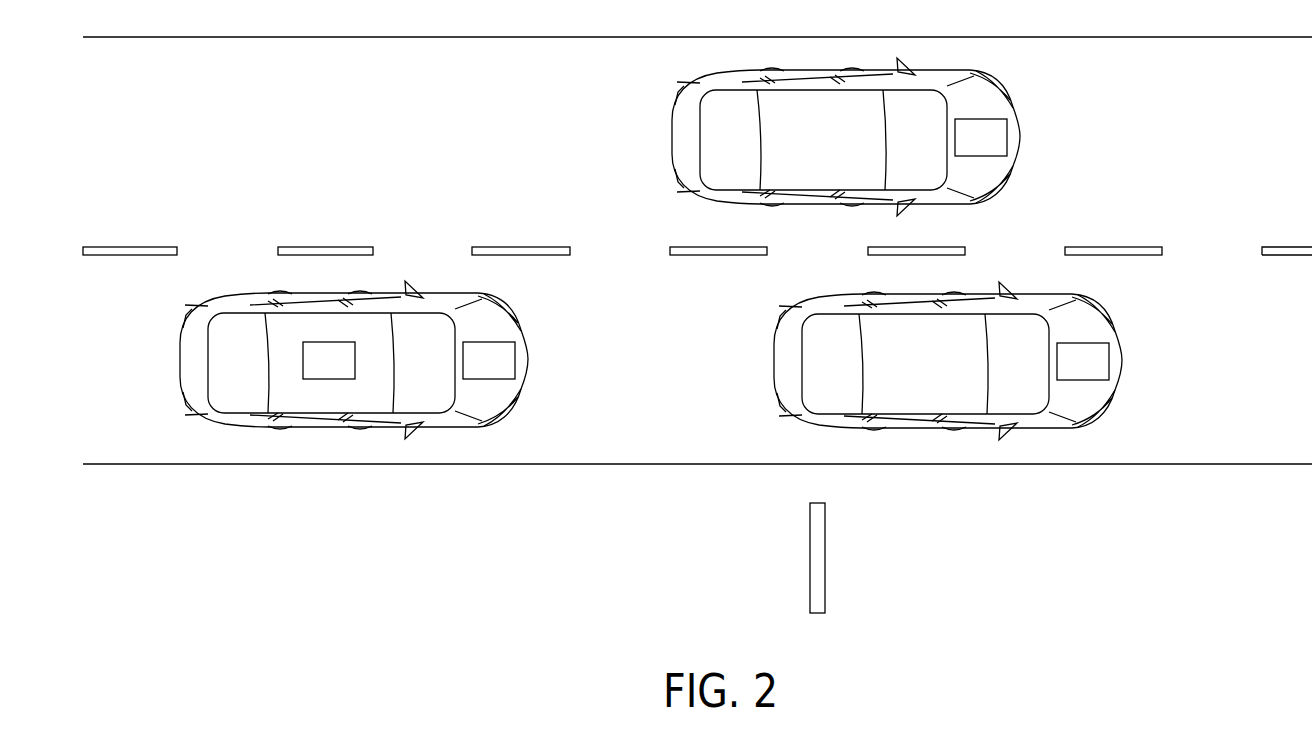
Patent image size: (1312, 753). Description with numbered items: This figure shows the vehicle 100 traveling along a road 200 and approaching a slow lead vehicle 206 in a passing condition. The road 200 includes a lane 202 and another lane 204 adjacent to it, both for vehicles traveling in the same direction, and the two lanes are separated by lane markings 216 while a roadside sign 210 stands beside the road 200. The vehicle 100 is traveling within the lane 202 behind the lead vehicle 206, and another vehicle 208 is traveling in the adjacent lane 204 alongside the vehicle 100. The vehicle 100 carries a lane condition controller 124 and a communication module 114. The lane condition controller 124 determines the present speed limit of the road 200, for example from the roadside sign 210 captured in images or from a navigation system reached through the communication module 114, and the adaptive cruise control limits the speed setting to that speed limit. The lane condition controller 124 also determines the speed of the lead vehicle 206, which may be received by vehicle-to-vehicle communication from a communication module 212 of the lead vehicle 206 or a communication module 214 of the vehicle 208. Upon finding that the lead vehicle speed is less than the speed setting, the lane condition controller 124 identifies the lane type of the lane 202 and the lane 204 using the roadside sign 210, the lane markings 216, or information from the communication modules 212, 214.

The vehicle 100 is at (180, 358).
The communication module 114 is at (489, 360).
The lane condition controller 124 is at (329, 360).
The road 200 is at (1193, 464).
The lane 202 is at (1292, 371).
The lane 204 is at (1292, 147).
The lead vehicle 206 is at (774, 358).
The vehicle 208 is at (672, 135).
The roadside sign 210 is at (825, 595).
The communication module 212 is at (1083, 361).
The communication module 214 is at (981, 137).
The lane markings 216 is at (327, 247).